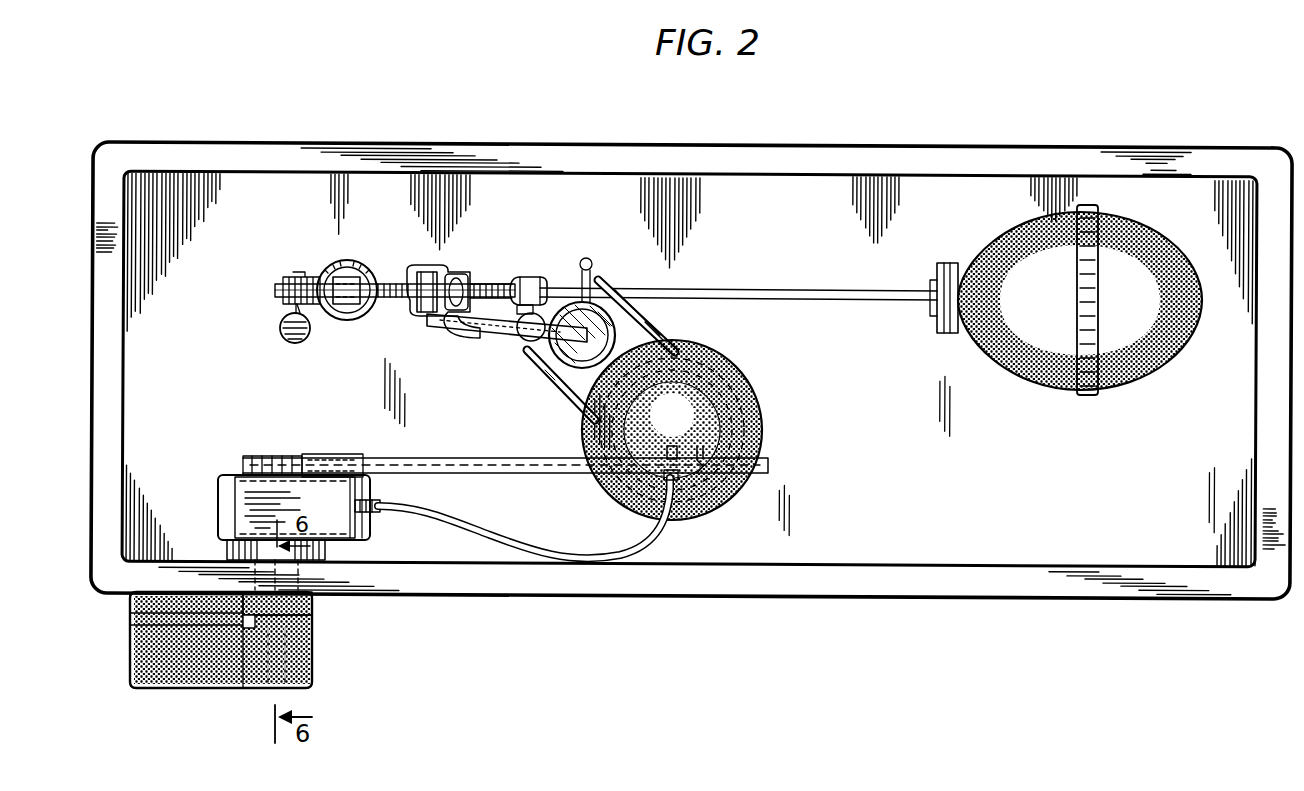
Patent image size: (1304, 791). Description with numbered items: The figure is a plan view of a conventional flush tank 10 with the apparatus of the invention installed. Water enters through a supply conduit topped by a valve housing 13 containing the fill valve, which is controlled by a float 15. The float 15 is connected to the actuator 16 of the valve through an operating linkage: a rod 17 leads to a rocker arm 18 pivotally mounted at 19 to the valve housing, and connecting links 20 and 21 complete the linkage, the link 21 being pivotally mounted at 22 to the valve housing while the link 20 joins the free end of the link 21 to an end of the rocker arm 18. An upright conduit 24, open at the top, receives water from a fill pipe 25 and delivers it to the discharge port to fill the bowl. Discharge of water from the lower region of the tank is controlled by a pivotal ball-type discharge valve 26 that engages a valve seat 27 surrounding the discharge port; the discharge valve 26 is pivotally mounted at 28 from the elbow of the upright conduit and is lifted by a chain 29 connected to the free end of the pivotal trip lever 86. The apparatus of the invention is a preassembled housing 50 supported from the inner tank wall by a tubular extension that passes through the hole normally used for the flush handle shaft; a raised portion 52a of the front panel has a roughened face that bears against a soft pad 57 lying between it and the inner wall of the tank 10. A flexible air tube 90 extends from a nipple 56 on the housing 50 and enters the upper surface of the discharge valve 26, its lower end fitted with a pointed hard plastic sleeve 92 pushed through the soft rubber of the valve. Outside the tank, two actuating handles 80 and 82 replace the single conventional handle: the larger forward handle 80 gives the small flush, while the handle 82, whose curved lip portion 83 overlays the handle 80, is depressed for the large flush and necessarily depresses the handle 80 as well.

The flush tank 10 is at (93, 404).
The valve housing 13 is at (340, 322).
The float 15 is at (1172, 237).
The actuator 16 is at (346, 276).
The rod 17 is at (866, 290).
The rocker arm 18 is at (498, 284).
The pivot 19 is at (466, 282).
The connecting link 20 is at (428, 276).
The connecting link 21 is at (378, 284).
The pivot 22 is at (288, 312).
The upright conduit 24 is at (583, 315).
The fill pipe 25 is at (500, 338).
The discharge valve 26 is at (690, 392).
The valve seat 27 is at (760, 447).
The pivot mount 28 is at (535, 372).
The chain 29 is at (725, 452).
The housing 50 is at (218, 504).
The raised portion 52a is at (340, 553).
The nipple 56 is at (368, 500).
The pad 57 is at (225, 554).
The handle 80 is at (200, 690).
The handle 82 is at (130, 616).
The curved lip portion 83 is at (135, 637).
The trip lever 86 is at (520, 462).
The flexible air tube 90 is at (512, 540).
The plastic sleeve 92 is at (670, 477).